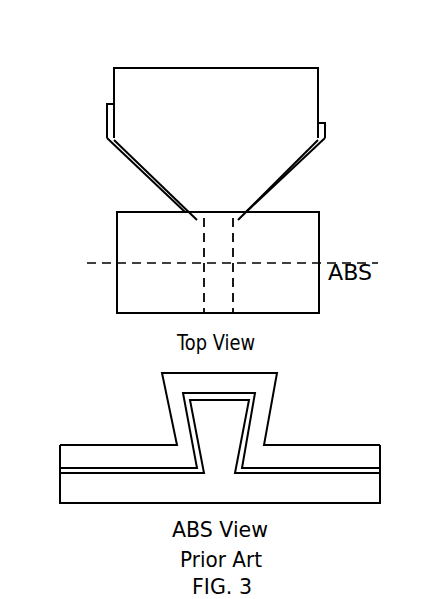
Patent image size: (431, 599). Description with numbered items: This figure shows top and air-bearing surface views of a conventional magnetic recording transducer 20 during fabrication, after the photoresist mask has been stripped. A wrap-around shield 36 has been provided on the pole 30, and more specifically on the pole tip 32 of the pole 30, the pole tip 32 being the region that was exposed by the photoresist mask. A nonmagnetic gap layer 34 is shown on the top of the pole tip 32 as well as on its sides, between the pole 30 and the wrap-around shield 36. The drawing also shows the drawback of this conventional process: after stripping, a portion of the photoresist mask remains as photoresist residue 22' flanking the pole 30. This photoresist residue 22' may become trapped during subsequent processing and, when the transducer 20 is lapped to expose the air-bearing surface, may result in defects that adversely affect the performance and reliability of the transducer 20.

The conventional magnetic recording transducer 20 is at (228, 48).
The photoresist residue 22' is at (187, 160).
The pole 30 is at (203, 263).
The pole tip region 32 is at (186, 255).
The gap layer 34 is at (89, 468).
The wrap-around shield 36 is at (117, 313).